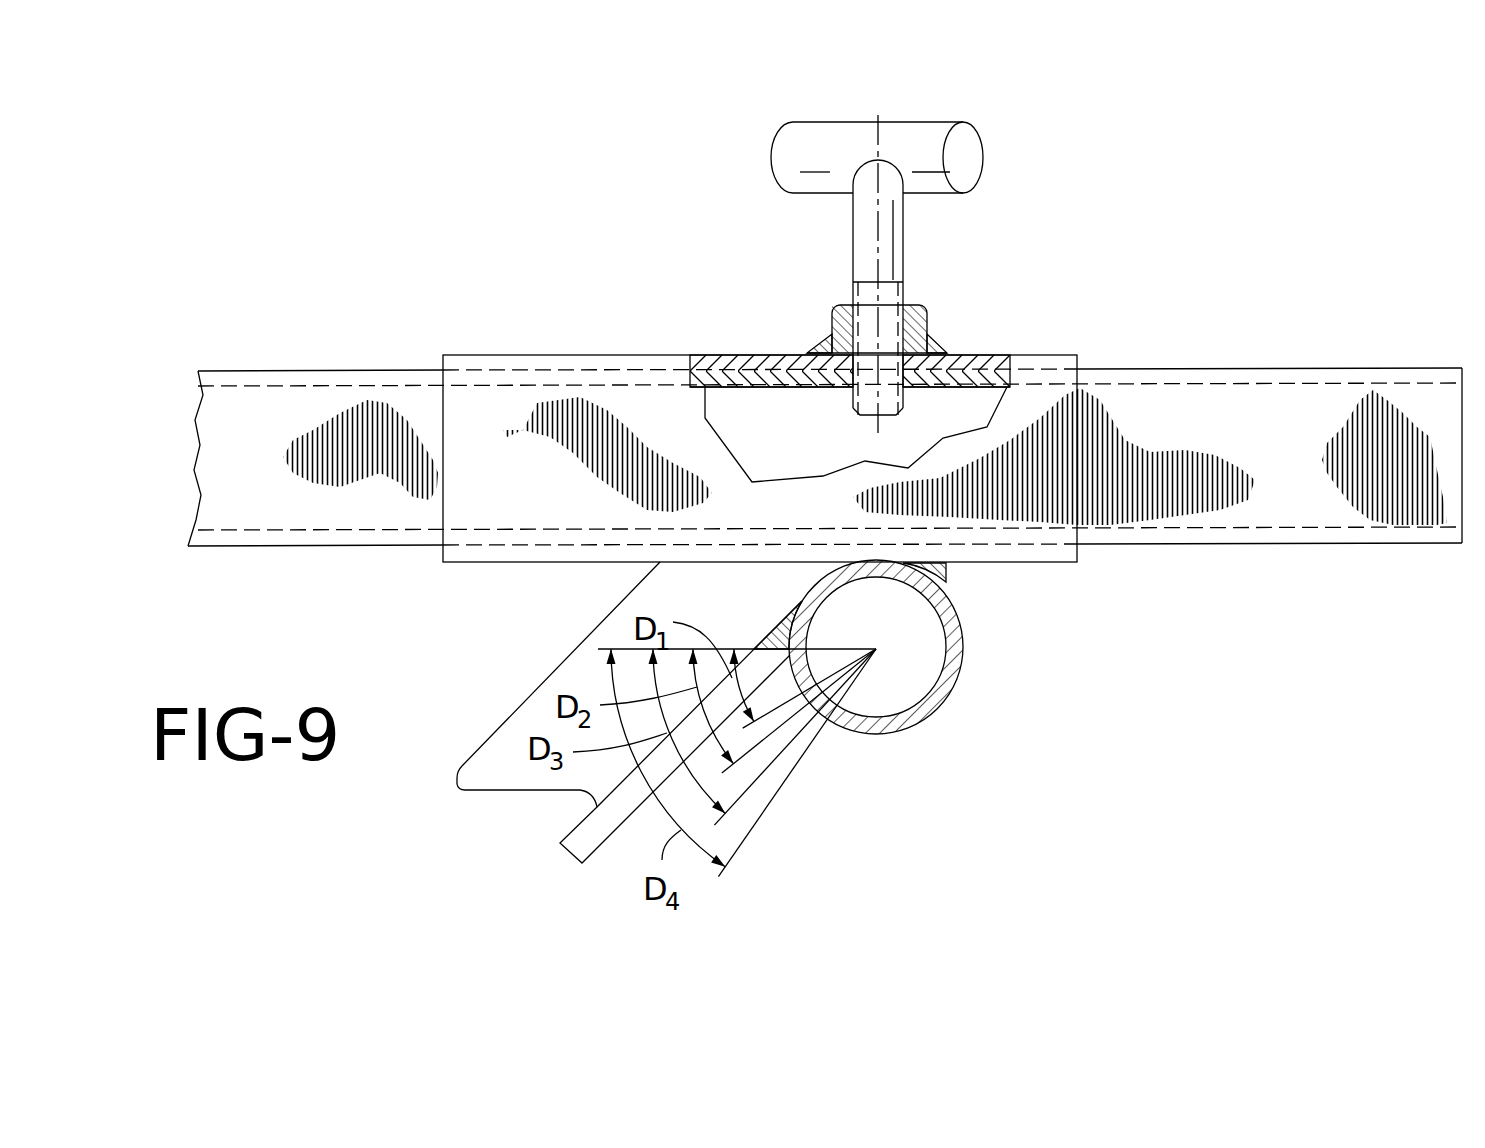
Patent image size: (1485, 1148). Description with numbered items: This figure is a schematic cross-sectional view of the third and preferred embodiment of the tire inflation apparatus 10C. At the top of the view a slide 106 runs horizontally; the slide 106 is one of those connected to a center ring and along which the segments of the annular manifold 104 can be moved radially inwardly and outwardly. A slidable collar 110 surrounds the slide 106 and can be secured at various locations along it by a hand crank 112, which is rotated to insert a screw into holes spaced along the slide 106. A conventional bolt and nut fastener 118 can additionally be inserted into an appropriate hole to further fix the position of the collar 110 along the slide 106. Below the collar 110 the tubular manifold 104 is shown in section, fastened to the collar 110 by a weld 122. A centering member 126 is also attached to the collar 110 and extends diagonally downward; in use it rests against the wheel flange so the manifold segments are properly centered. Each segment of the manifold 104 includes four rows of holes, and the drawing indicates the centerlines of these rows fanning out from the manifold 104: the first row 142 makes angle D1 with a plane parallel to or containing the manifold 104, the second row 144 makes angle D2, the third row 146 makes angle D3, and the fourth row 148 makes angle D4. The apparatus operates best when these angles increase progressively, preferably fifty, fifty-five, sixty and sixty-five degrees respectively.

The tire inflation apparatus 10C is at (632, 258).
The annular manifold 104 is at (958, 684).
The slide 106 is at (1274, 432).
The slidable collar 110 is at (545, 353).
The hand crank 112 is at (965, 147).
The bolt and nut fastener 118 is at (922, 306).
The weld 122 is at (797, 615).
The centering member 126 is at (567, 664).
The first row of holes 142 is at (800, 688).
The second row of holes 144 is at (803, 728).
The third row of holes 146 is at (803, 710).
The fourth row of holes 148 is at (807, 692).